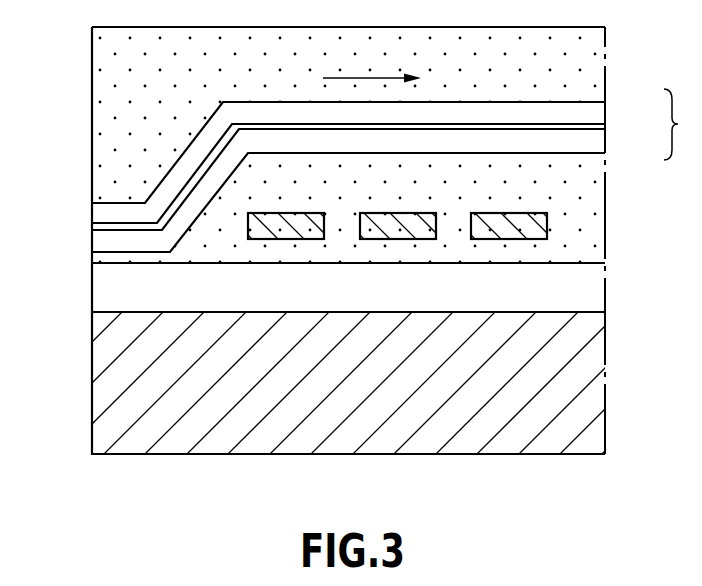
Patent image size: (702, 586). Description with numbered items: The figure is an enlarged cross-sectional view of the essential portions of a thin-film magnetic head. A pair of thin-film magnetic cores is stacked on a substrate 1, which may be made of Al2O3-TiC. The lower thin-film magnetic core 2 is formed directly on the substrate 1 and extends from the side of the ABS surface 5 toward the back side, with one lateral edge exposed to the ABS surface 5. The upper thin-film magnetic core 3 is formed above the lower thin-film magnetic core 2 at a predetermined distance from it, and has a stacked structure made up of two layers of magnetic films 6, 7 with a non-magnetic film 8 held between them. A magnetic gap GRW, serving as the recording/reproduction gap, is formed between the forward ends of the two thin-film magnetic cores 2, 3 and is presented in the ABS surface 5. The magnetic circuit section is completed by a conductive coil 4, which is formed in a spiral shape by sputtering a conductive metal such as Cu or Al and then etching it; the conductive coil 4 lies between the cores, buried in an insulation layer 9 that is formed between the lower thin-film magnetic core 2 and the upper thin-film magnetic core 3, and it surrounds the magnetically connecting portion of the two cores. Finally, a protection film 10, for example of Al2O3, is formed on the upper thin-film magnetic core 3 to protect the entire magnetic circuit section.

The substrate 1 is at (594, 383).
The lower thin-film magnetic core 2 is at (596, 288).
The upper thin-film magnetic core 3 is at (680, 124).
The conductive coil 4 is at (505, 237).
The ABS surface 5 is at (92, 387).
The magnetic film 6 is at (598, 112).
The magnetic film 7 is at (603, 138).
The non-magnetic film 8 is at (603, 126).
The insulation layer 9 is at (600, 201).
The protection film 10 is at (592, 44).
The magnetic gap GRW is at (92, 259).